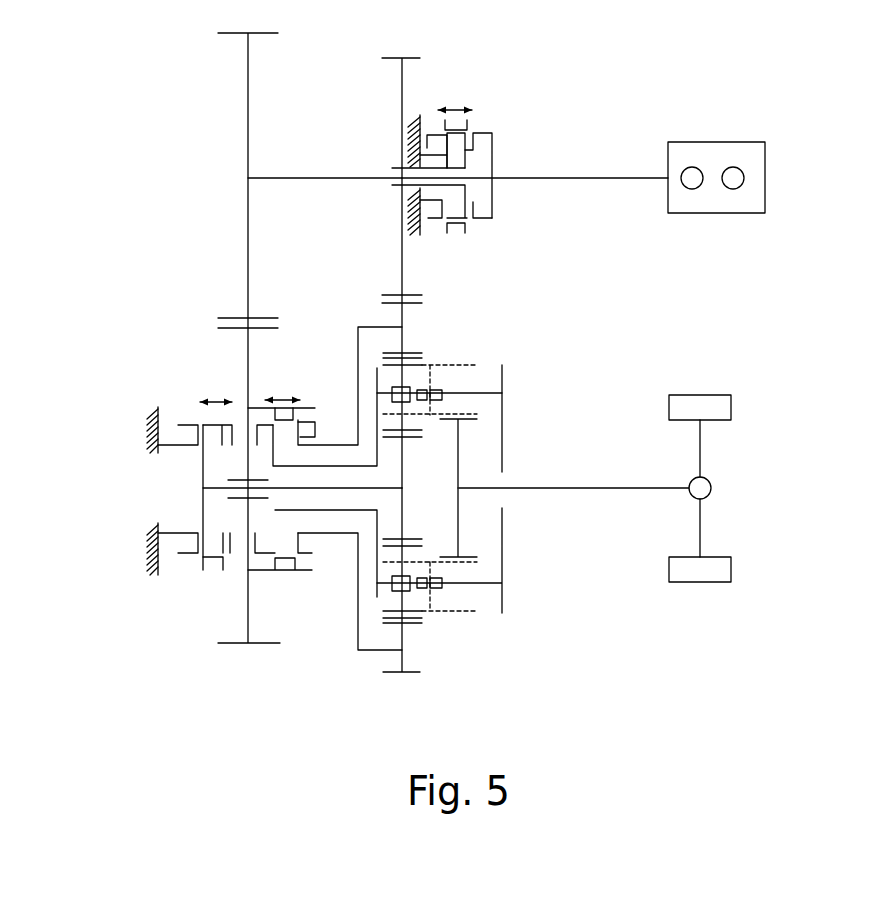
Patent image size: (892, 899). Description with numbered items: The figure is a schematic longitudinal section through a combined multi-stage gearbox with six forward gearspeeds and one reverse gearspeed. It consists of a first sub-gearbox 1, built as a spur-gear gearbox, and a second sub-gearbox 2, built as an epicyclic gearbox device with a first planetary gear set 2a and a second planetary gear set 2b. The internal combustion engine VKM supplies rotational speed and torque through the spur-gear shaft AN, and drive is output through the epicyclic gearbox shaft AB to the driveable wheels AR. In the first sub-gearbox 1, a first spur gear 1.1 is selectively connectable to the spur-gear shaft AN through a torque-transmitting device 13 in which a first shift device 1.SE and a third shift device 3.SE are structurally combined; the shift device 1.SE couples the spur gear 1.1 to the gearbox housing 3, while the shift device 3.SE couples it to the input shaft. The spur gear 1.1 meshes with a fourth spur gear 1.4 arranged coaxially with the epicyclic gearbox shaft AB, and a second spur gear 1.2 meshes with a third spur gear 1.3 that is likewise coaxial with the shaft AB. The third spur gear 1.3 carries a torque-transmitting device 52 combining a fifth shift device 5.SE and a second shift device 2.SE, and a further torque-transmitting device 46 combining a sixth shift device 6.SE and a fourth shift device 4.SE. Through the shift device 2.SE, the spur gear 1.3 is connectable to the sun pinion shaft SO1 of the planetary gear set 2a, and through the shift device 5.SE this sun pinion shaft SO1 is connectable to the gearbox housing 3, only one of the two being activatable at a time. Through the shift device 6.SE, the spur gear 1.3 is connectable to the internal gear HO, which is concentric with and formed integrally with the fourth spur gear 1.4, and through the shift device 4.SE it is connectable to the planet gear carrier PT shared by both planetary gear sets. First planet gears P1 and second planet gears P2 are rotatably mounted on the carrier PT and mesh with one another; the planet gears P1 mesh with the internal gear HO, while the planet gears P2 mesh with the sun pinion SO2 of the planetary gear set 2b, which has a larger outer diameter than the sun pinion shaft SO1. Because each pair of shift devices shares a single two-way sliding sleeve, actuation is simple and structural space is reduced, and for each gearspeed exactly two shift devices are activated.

The first sub-gearbox 1 is at (210, 141).
The first spur gear 1.1 is at (402, 82).
The second spur gear 1.2 is at (250, 72).
The third spur gear 1.3 is at (248, 358).
The fourth spur gear 1.4 is at (383, 303).
The first shift device 1.SE is at (442, 149).
The second shift device 2.SE is at (233, 406).
The third shift device 3.SE is at (452, 149).
The fourth shift device 4.SE is at (235, 459).
The fifth shift device 5.SE is at (165, 406).
The sixth shift device 6.SE is at (309, 394).
The torque-transmitting device 13 is at (507, 107).
The gearbox housing 3 is at (404, 208).
The torque-transmitting device 46 is at (293, 417).
The torque-transmitting device 52 is at (200, 402).
The internal gear HO is at (402, 322).
The planet gear carrier PT is at (315, 470).
The first planet gears P1 is at (410, 354).
The second planet gears P2 is at (473, 367).
The sun pinion shaft SO1 is at (402, 535).
The sun pinion SO2 is at (458, 430).
The second sub-gearbox 2 is at (477, 619).
The first planetary gear set 2a is at (408, 683).
The second planetary gear set 2b is at (467, 632).
The spur-gear shaft AN is at (614, 178).
The epicyclic gearbox shaft AB is at (612, 488).
The driveable wheels AR is at (710, 395).
The internal combustion engine VKM is at (715, 142).